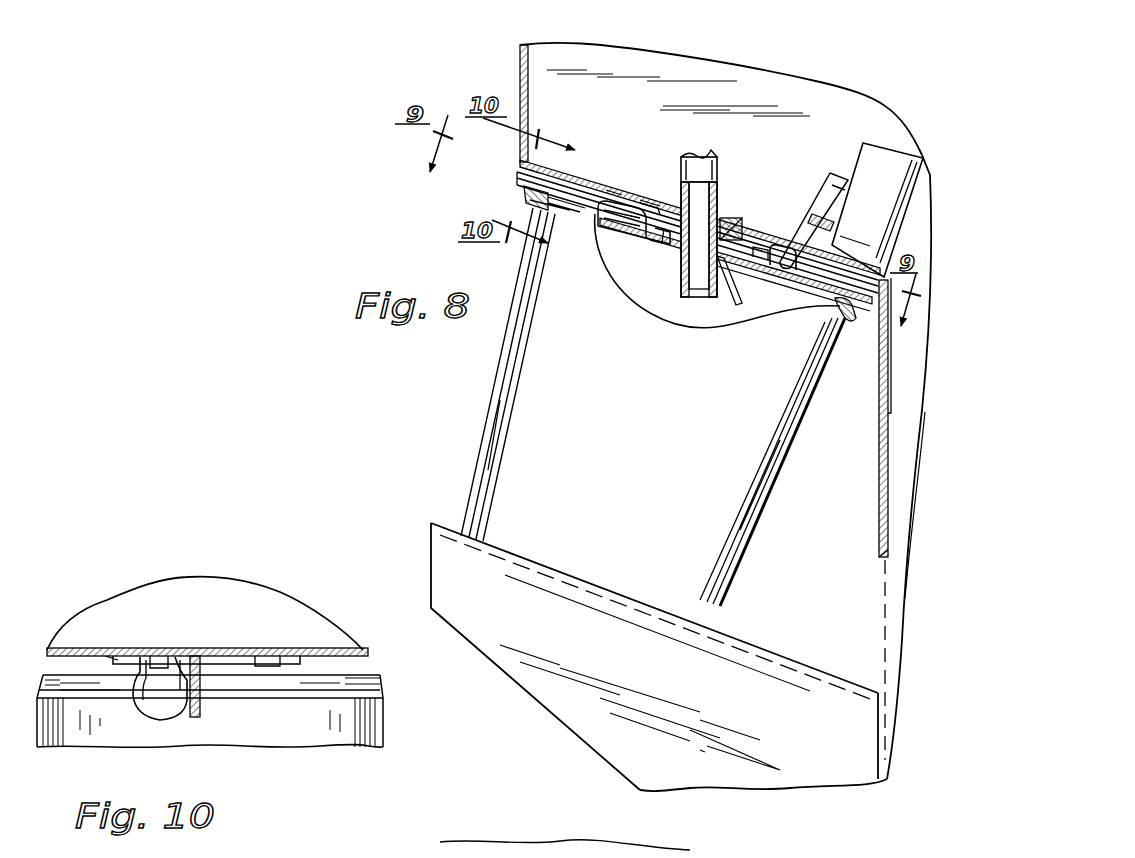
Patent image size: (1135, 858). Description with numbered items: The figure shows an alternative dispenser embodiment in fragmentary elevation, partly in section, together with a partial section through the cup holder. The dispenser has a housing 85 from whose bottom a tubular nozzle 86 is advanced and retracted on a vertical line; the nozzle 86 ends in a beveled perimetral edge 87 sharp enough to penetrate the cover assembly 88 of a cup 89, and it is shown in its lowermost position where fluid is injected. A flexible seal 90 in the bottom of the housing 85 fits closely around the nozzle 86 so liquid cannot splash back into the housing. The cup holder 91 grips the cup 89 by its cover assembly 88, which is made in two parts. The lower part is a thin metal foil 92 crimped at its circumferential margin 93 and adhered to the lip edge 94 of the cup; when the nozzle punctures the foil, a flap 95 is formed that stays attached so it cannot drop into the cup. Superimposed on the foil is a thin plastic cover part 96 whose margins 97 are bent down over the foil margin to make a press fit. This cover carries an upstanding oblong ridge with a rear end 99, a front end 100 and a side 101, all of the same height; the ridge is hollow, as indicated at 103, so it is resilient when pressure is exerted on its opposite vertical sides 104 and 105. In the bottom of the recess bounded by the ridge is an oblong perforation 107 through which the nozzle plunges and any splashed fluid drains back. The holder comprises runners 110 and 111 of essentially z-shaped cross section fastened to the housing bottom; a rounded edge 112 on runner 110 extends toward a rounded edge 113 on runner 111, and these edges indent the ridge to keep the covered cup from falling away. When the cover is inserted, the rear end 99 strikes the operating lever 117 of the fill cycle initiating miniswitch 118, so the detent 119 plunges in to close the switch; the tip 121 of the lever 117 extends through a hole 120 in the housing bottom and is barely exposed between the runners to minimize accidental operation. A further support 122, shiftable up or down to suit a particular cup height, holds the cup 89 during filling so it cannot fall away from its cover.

In FIG. 8, the housing 85 is at (520, 50).
In FIG. 10, the housing 85 is at (330, 647).
In FIG. 8, the tubular nozzle 86 is at (714, 162).
In FIG. 8, the beveled perimetral edge 87 is at (703, 289).
In FIG. 8, the cover assembly 88 is at (701, 271).
In FIG. 8, the cup 89 is at (503, 372).
In FIG. 8, the flexible seal 90 is at (731, 218).
In FIG. 8, the cup holder 91 is at (503, 175).
In FIG. 10, the cup holder 91 is at (313, 670).
In FIG. 8, the metal foil 92 is at (800, 268).
In FIG. 8, the circumferential margin 93 is at (840, 322).
In FIG. 8, the lip edge 94 is at (838, 303).
In FIG. 8, the flap 95 is at (728, 300).
In FIG. 8, the plastic cover part 96 is at (648, 240).
In FIG. 8, the margins 97 is at (872, 318).
In FIG. 8, the rear end 99 is at (782, 244).
In FIG. 8, the front end 100 is at (650, 198).
In FIG. 10, the side 101 is at (155, 660).
In FIG. 8, the hollow interior 103 is at (598, 232).
In FIG. 8, the vertical side 104 is at (612, 192).
In FIG. 8, the vertical side 105 is at (645, 205).
In FIG. 8, the oblong perforation 107 is at (665, 248).
In FIG. 8, the runner 110 is at (518, 163).
In FIG. 10, the runner 110 is at (117, 657).
In FIG. 10, the runner 111 is at (290, 657).
In FIG. 10, the rounded edge 112 is at (136, 700).
In FIG. 10, the rounded edge 113 is at (270, 660).
In FIG. 8, the operating lever 117 is at (838, 172).
In FIG. 8, the miniswitch 118 is at (885, 165).
In FIG. 8, the detent 119 is at (843, 232).
In FIG. 8, the hole 120 is at (744, 240).
In FIG. 8, the tip 121 is at (825, 262).
In FIG. 8, the support 122 is at (682, 684).